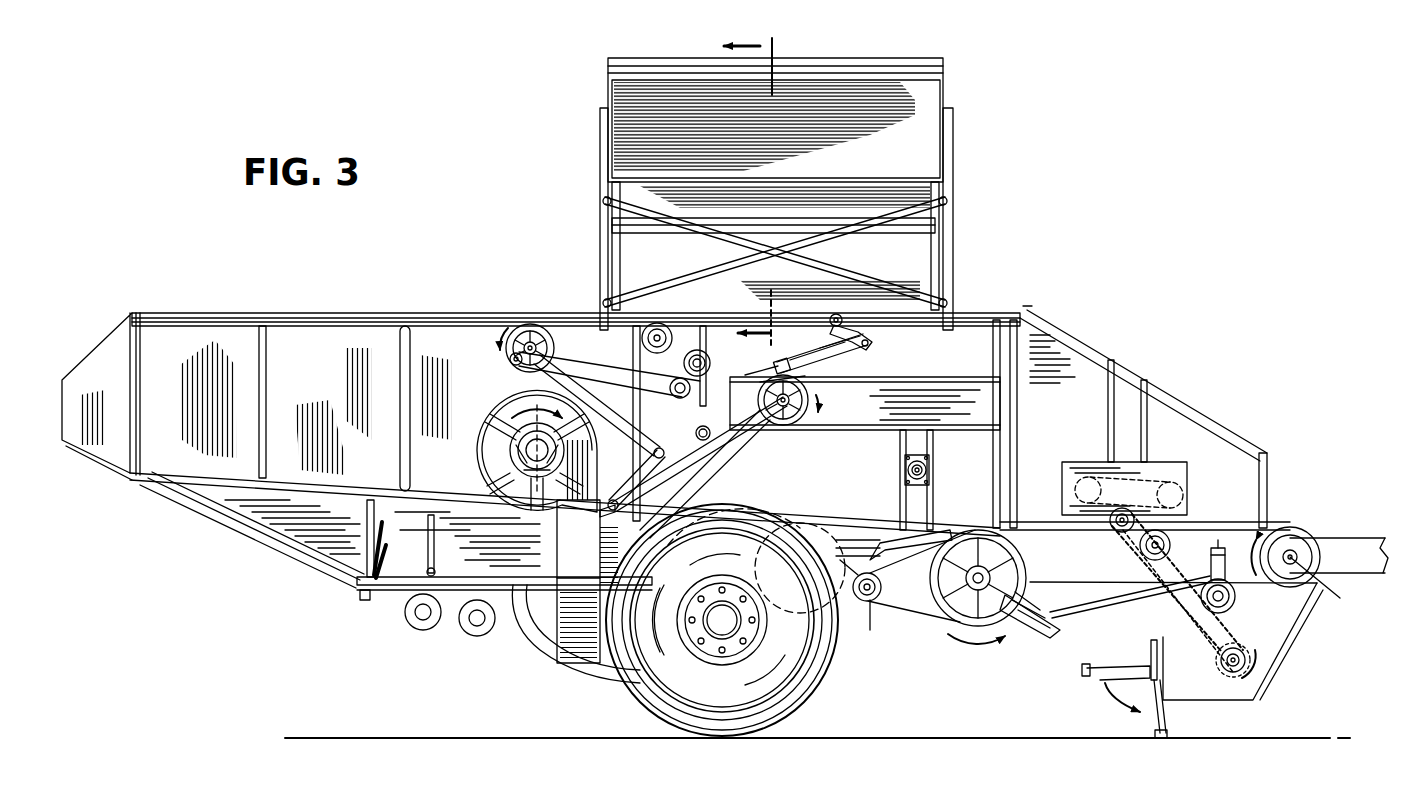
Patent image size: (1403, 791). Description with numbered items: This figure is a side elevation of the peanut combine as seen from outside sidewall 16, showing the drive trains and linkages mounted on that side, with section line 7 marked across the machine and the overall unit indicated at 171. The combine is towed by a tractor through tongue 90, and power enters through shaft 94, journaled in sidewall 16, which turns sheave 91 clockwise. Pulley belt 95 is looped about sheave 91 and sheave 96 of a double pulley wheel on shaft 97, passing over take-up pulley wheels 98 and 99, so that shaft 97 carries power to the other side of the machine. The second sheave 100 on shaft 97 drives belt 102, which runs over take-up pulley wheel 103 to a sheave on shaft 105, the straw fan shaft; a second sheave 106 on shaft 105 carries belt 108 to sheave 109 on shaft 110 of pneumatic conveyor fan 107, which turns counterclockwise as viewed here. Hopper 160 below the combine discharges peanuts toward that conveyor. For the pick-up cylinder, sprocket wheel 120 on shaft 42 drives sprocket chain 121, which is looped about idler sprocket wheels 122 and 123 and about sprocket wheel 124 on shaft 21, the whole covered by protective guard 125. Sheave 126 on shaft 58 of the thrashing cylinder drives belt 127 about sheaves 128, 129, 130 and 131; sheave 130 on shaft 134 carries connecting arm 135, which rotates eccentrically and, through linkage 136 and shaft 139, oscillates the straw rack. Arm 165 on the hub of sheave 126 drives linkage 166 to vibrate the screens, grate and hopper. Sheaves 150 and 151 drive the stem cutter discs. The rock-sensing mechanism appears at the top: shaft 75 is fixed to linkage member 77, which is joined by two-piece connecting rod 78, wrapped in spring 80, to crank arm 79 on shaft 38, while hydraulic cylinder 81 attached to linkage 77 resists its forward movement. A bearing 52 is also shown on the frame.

The section line 7- 7 is at (760, 193).
The hopper 171 is at (975, 134).
The sidewall 16 is at (329, 395).
The shaft 134 is at (513, 352).
The sheave 130 is at (535, 325).
The sheave 131 is at (662, 325).
The shaft 75 is at (830, 315).
The connecting arm 135 is at (565, 392).
The belt 127 is at (612, 382).
The sheave 128 is at (686, 366).
The hydraulic cylinder 81 is at (822, 352).
The linkage member 77 is at (876, 342).
The spring 80 is at (835, 365).
The pneumatic conveyor fan 107 is at (508, 400).
The sheave 129 is at (677, 397).
The shaft 38 is at (703, 426).
The connecting rod 78 is at (812, 385).
The sheave 126 is at (822, 416).
The shaft 110 is at (510, 452).
The linkage 136 is at (634, 485).
The crank arm 79 is at (710, 440).
The arm 165 is at (748, 432).
The shaft 58 is at (790, 425).
The bearing 52 is at (930, 468).
The sheave 109 is at (500, 475).
The belt 108 is at (720, 488).
The sheave 106 is at (775, 522).
The shaft 105 is at (805, 540).
The shaft 97 is at (980, 530).
The protective guard 125 is at (1088, 462).
The idler sprocket wheel 123 is at (1076, 488).
The shaft 42 is at (1128, 508).
The idler sprocket wheel 122 is at (1180, 482).
The shaft 139 is at (602, 525).
The linkage 166 is at (600, 552).
The sheave 91 is at (1292, 540).
The tongue 90 is at (1360, 548).
The sprocket wheel 120 is at (1102, 532).
The take-up pulley wheel 98 is at (1170, 550).
The take-up pulley wheel 99 is at (1236, 600).
The shaft 94 is at (1321, 587).
The sheave 151 is at (412, 628).
The sheave 150 is at (477, 636).
The hopper 160 is at (530, 620).
The belt 102 is at (878, 598).
The take-up pulley wheel 103 is at (866, 604).
The sheave 100 is at (945, 612).
The sheave 96 is at (982, 622).
The pulley belt 95 is at (1110, 600).
The sprocket chain 121 is at (1240, 632).
The shaft 21 is at (1208, 661).
The sprocket wheel 124 is at (1233, 677).